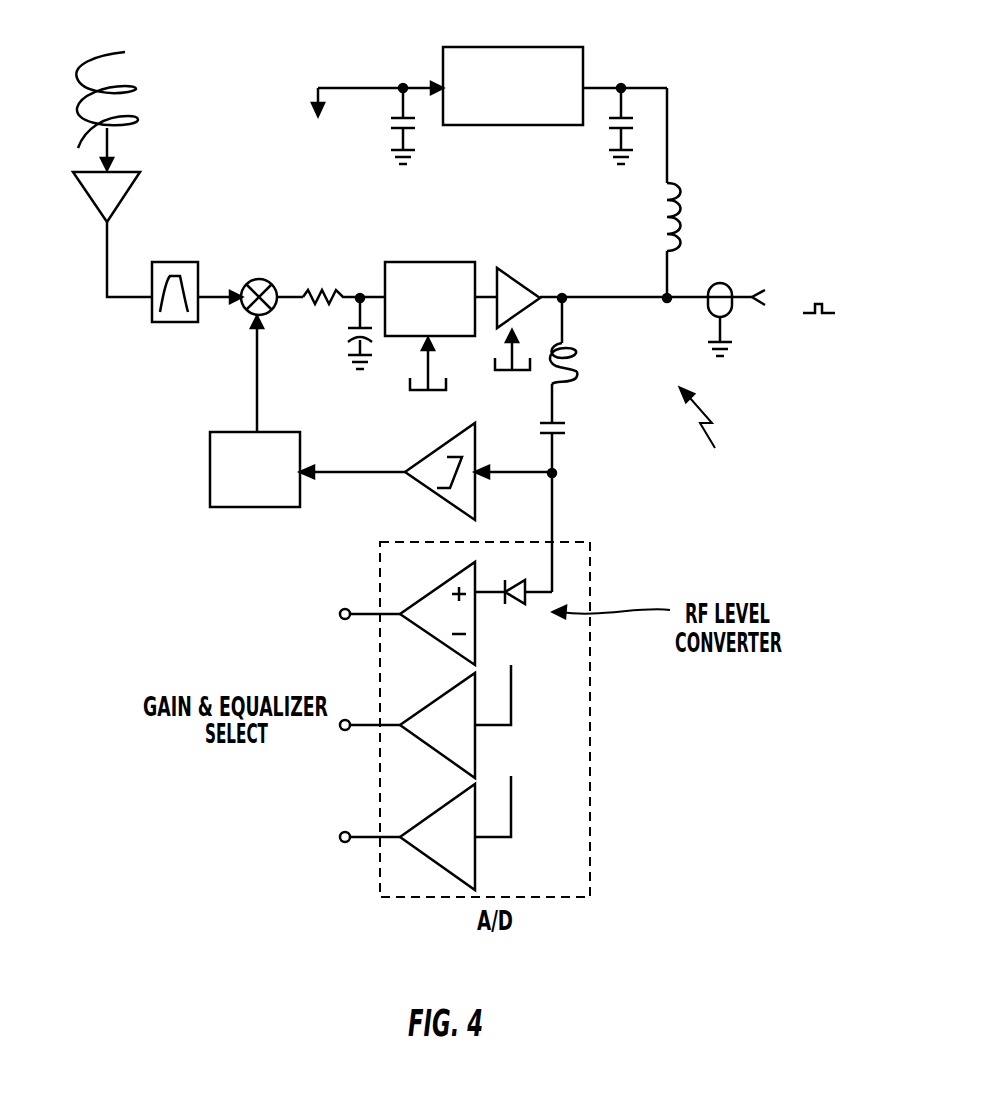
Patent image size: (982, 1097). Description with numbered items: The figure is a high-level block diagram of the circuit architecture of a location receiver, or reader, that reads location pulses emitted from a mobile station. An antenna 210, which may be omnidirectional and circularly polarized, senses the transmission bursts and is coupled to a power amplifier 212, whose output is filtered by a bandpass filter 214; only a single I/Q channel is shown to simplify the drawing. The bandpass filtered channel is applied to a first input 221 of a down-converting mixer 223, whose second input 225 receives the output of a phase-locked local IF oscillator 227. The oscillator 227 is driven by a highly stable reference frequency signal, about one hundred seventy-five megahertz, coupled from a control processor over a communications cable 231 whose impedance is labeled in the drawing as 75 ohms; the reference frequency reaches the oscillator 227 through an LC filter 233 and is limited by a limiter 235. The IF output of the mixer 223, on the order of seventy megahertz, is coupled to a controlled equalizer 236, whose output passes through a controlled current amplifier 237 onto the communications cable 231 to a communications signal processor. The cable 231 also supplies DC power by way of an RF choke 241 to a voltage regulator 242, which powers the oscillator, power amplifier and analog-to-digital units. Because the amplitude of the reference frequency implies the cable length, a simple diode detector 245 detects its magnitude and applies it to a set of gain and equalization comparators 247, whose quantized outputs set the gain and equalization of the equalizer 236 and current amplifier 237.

The antenna 210 is at (133, 73).
The power amplifier 212 is at (93, 196).
The bandpass filter 214 is at (176, 324).
The first input 221 is at (246, 283).
The down-converting mixer 223 is at (256, 279).
The second input 225 is at (250, 318).
The phase-locked local IF oscillator 227 is at (210, 468).
The communications cable 231 is at (607, 297).
The LC filter 233 is at (570, 342).
The limiter 235 is at (425, 455).
The controlled equalizer 236 is at (430, 260).
The controlled current amplifier 237 is at (522, 283).
The RF choke 241 is at (664, 203).
The voltage regulator 242 is at (553, 47).
The diode detector 245 is at (522, 581).
The gain and equalization comparators 247 is at (522, 800).
The output connector 75 is at (771, 319).